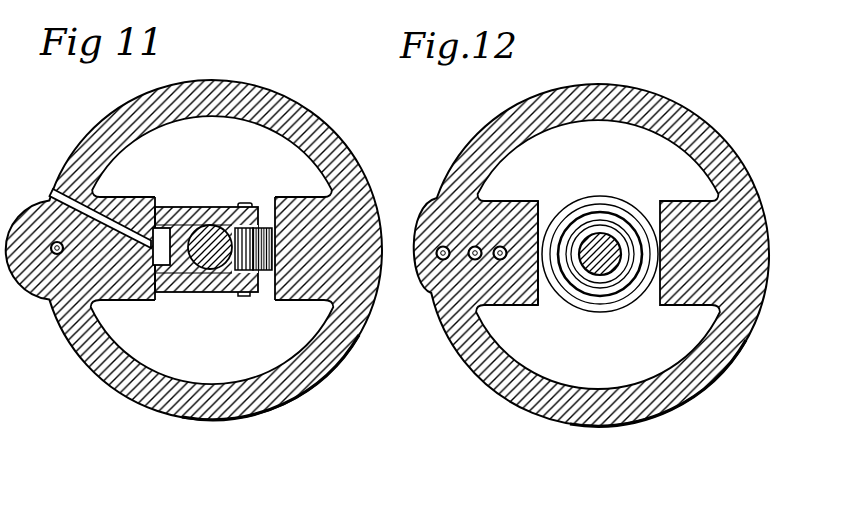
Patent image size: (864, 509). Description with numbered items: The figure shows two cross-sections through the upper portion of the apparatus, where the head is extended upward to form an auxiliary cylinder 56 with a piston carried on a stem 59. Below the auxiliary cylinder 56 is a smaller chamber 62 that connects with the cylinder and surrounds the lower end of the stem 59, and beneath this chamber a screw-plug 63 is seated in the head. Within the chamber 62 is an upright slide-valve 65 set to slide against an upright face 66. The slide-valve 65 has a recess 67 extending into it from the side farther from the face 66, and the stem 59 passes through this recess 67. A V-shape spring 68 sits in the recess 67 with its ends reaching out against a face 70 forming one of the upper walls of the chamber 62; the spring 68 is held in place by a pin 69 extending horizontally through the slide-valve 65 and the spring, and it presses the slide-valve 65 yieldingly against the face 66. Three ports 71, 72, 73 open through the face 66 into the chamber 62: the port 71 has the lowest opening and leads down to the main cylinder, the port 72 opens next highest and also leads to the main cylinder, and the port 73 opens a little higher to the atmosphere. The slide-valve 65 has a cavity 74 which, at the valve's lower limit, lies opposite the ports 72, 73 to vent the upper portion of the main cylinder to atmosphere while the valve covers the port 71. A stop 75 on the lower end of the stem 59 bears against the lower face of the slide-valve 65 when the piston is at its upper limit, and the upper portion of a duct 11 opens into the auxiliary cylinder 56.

In FIG. 11, the duct 11 is at (55, 256).
In FIG. 12, the duct 11 is at (441, 260).
In FIG. 11, the auxiliary cylinder 56 is at (340, 172).
In FIG. 12, the auxiliary cylinder 56 is at (670, 110).
In FIG. 11, the stem 59 is at (233, 227).
In FIG. 12, the stem 59 is at (608, 240).
In FIG. 11, the chamber 62 is at (182, 188).
In FIG. 12, the chamber 62 is at (565, 153).
In FIG. 12, the screw-plug 63 is at (609, 307).
In FIG. 11, the slide-valve 65 is at (185, 217).
In FIG. 11, the upright face 66 is at (95, 327).
In FIG. 12, the upright face 66 is at (538, 203).
In FIG. 11, the recess 67 is at (226, 268).
In FIG. 11, the V-shape spring 68 is at (335, 200).
In FIG. 11, the pin 69 is at (244, 297).
In FIG. 11, the face 70 is at (266, 222).
In FIG. 12, the face 70 is at (660, 308).
In FIG. 12, the port 71 is at (500, 260).
In FIG. 12, the port 72 is at (475, 260).
In FIG. 11, the port 73 is at (82, 202).
In FIG. 11, the cavity 74 is at (163, 248).
In FIG. 12, the stop 75 is at (599, 230).